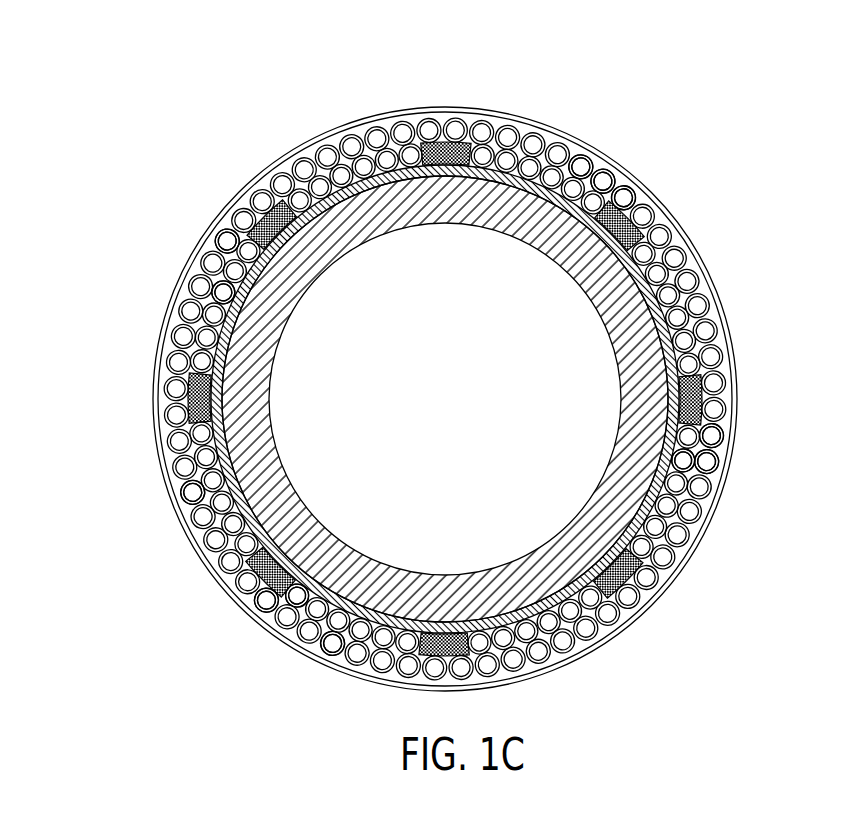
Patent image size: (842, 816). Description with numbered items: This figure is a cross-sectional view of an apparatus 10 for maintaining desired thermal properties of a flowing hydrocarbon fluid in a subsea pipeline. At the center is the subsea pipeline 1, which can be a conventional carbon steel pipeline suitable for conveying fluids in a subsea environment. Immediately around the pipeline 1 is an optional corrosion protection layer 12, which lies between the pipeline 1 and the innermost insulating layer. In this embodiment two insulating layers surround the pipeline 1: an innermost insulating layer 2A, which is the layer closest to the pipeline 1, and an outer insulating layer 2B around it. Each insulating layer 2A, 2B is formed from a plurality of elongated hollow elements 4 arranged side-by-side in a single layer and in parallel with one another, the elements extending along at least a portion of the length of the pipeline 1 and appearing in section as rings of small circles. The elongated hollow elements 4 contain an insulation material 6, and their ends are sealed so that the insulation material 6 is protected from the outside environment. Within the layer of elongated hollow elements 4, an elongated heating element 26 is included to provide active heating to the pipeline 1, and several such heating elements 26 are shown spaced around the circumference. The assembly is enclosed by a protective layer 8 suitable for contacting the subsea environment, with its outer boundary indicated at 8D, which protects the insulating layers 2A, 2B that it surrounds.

The apparatus 10 is at (779, 231).
The subsea pipeline 1 is at (653, 344).
The innermost insulating layer 2A is at (197, 338).
The outer insulating layer 2B is at (181, 300).
The elongated hollow element 4 is at (615, 170).
The insulation material 6 is at (684, 470).
The protective layer 8 is at (513, 113).
The outer sheath surface 8D is at (403, 113).
The corrosion protection layer 12 is at (343, 139).
The elongated heating element 26 is at (620, 221).